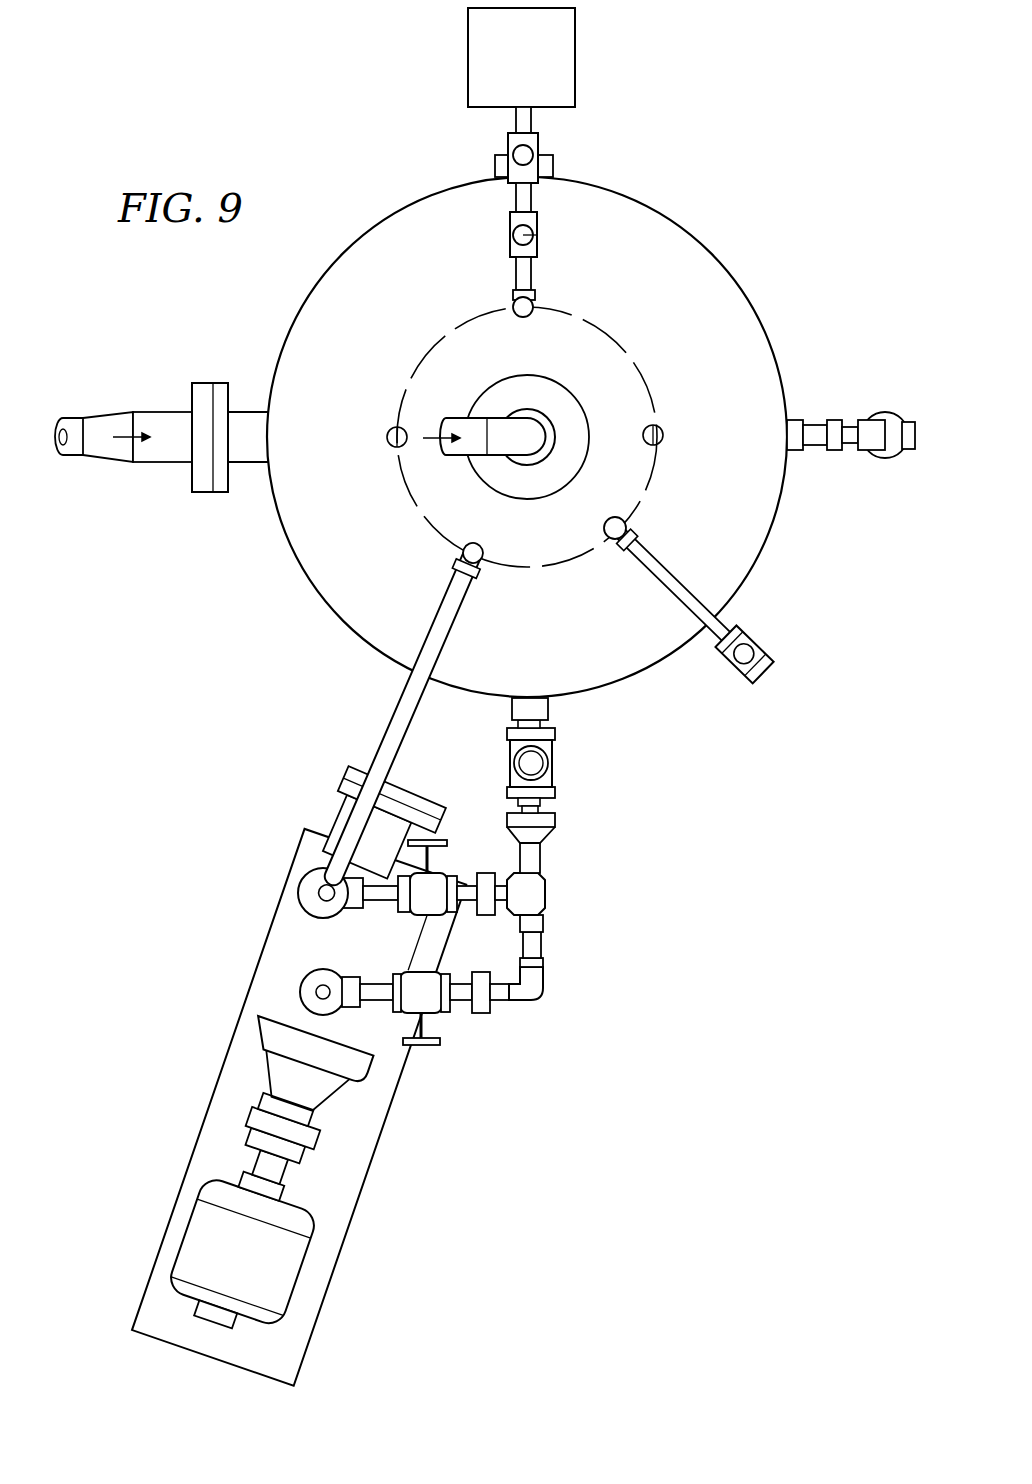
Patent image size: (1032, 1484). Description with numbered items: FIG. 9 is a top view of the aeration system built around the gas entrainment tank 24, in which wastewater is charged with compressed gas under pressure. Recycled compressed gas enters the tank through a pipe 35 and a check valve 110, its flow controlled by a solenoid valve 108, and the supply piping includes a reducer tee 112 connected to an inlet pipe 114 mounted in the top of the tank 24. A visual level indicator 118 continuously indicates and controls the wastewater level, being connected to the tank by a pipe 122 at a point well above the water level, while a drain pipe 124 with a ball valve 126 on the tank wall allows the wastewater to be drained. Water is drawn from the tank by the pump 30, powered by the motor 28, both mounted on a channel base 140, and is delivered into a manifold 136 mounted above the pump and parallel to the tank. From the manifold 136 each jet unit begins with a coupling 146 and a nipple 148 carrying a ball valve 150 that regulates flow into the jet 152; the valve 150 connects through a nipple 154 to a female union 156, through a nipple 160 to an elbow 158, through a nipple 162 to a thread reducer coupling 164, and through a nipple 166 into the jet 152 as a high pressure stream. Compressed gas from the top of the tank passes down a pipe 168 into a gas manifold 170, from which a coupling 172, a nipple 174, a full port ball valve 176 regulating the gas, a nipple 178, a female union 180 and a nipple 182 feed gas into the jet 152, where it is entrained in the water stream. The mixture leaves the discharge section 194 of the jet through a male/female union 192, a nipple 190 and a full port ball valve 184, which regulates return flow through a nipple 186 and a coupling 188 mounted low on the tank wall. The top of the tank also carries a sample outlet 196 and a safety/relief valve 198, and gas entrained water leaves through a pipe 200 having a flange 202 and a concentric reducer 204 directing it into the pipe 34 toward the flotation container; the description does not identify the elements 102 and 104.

The gas entrainment tank 24 is at (684, 337).
The motor 28 is at (205, 1222).
The pump 30 is at (262, 1012).
The pipe 34 is at (75, 458).
The pipe 35 is at (533, 118).
The inlet pipe 102 is at (452, 418).
The central port 104 is at (548, 415).
The solenoid valve 108 is at (510, 152).
The check valve 110 is at (537, 236).
The reducer tee 112 is at (514, 297).
The inlet pipe 114 is at (533, 302).
The visual level indicator 118 is at (765, 648).
The pipe 122 is at (672, 575).
The drain pipe 124 is at (818, 420).
The ball valve 126 is at (888, 412).
The manifold 136 is at (290, 979).
The channel base 140 is at (355, 1215).
The coupling 146 is at (330, 972).
The nipple 148 is at (369, 1072).
The ball valve 150 is at (392, 1002).
The jet 152 is at (546, 890).
The nipple 154 is at (436, 1013).
The female union 156 is at (485, 1013).
The elbow 158 is at (545, 1003).
The nipple 160 is at (520, 1003).
The nipple 162 is at (544, 962).
The thread reducer coupling 164 is at (542, 947).
The nipple 166 is at (544, 925).
The pipe 168 is at (392, 718).
The gas manifold 170 is at (298, 890).
The coupling 172 is at (347, 810).
The nipple 174 is at (375, 900).
The full port ball valve 176 is at (438, 915).
The nipple 178 is at (458, 914).
The female union 180 is at (445, 870).
The nipple 182 is at (490, 873).
The full port ball valve 184 is at (553, 765).
The nipple 186 is at (549, 715).
The coupling 188 is at (512, 708).
The nipple 190 is at (556, 795).
The male/female union 192 is at (556, 822).
The discharge section 194 is at (541, 858).
The sample outlet 196 is at (662, 442).
The safety/relief valve 198 is at (390, 430).
The pipe 200 is at (242, 462).
The flange 202 is at (208, 383).
The concentric reducer 204 is at (130, 412).